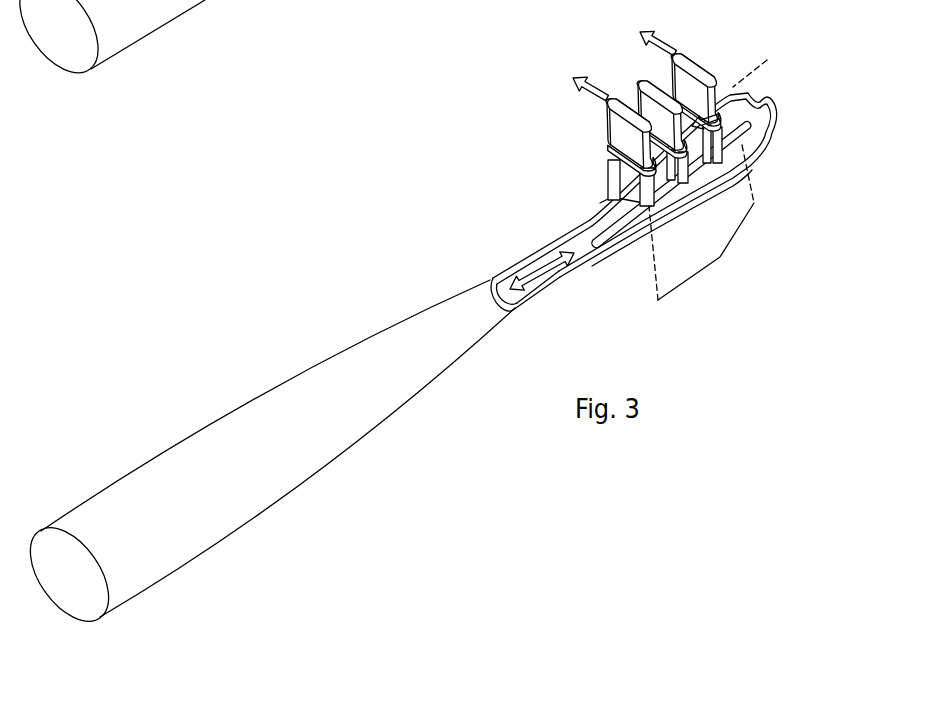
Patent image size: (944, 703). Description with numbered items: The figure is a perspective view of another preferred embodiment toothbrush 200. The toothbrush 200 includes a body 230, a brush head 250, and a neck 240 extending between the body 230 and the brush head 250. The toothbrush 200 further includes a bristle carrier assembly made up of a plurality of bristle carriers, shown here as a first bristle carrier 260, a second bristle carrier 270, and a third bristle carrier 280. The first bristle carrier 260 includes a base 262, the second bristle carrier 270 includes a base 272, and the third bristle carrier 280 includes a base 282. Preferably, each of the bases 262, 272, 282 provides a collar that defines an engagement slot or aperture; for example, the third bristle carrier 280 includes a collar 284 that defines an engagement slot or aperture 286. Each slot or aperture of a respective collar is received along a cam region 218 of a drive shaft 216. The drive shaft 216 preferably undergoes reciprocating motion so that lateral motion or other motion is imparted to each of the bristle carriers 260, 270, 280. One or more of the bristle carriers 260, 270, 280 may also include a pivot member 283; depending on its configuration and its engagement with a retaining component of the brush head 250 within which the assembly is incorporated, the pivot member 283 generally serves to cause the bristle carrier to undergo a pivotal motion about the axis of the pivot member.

The toothbrush 200 is at (480, 152).
The drive shaft 216 is at (603, 254).
The cam region 218 is at (720, 257).
The body 230 is at (128, 492).
The neck 240 is at (552, 291).
The brush head 250 is at (776, 125).
The first bristle carrier 260 is at (700, 64).
The base 262 is at (768, 112).
The second bristle carrier 270 is at (643, 72).
The base 272 is at (699, 210).
The third bristle carrier 280 is at (612, 128).
The base 282 is at (610, 151).
The pivot member 283 is at (607, 176).
The collar 284 is at (600, 202).
The engagement slot or aperture 286 is at (639, 240).